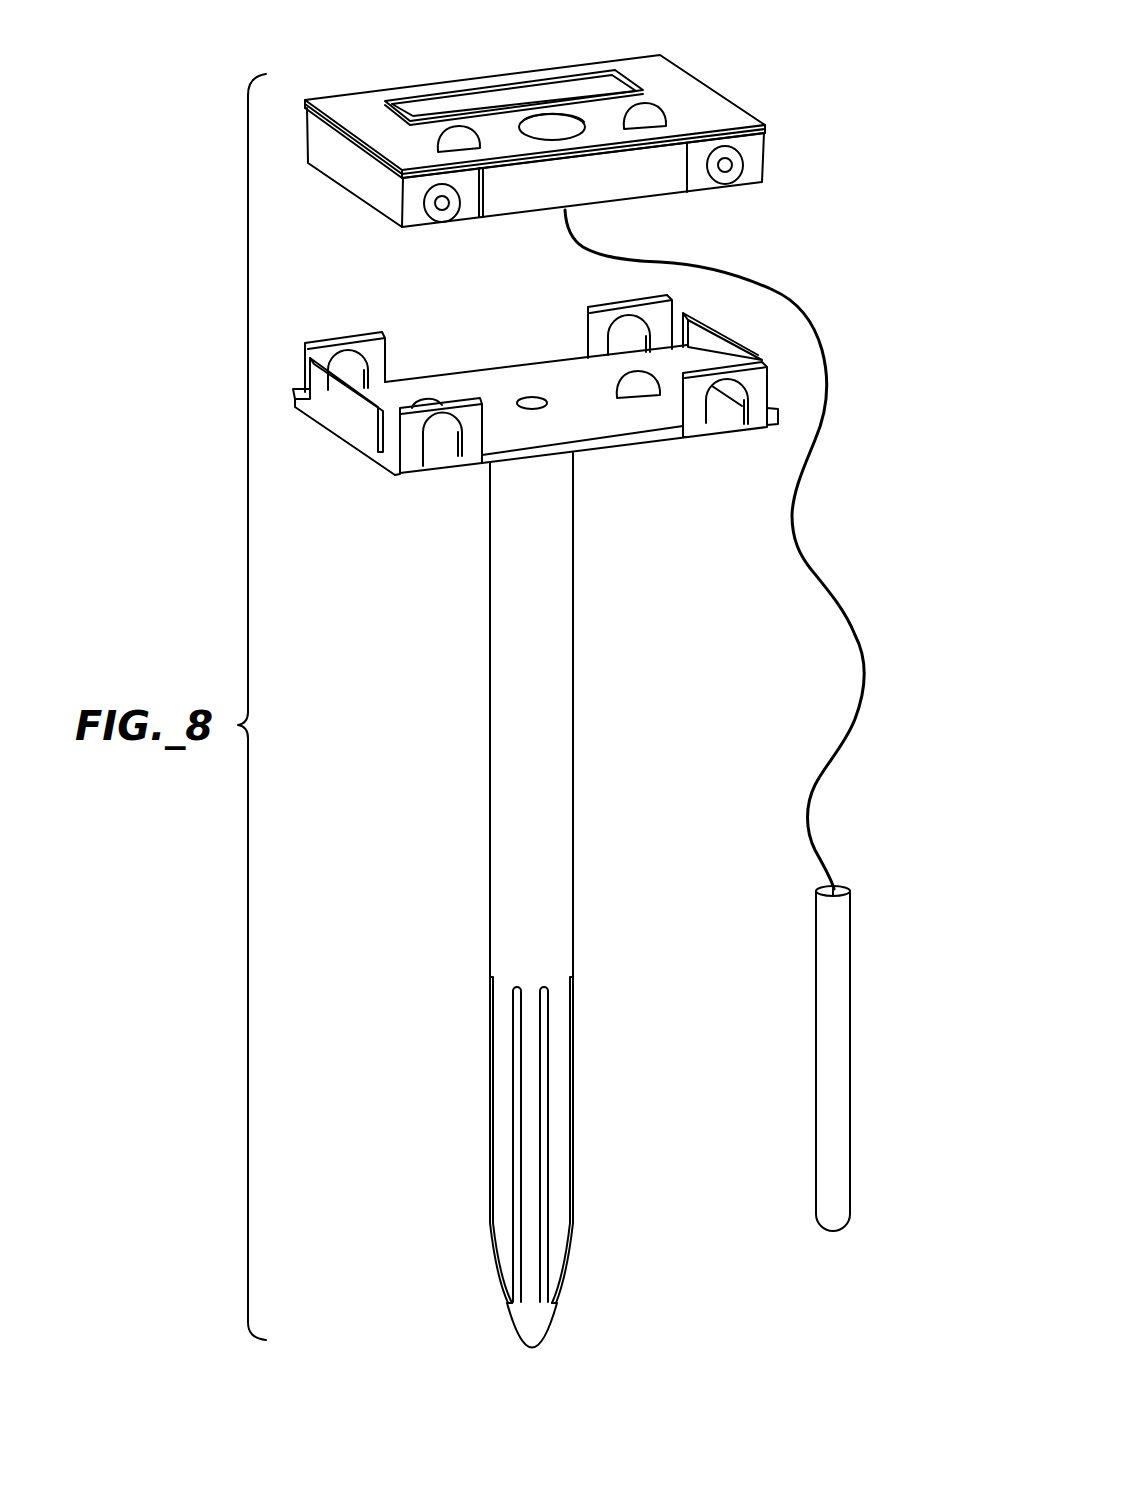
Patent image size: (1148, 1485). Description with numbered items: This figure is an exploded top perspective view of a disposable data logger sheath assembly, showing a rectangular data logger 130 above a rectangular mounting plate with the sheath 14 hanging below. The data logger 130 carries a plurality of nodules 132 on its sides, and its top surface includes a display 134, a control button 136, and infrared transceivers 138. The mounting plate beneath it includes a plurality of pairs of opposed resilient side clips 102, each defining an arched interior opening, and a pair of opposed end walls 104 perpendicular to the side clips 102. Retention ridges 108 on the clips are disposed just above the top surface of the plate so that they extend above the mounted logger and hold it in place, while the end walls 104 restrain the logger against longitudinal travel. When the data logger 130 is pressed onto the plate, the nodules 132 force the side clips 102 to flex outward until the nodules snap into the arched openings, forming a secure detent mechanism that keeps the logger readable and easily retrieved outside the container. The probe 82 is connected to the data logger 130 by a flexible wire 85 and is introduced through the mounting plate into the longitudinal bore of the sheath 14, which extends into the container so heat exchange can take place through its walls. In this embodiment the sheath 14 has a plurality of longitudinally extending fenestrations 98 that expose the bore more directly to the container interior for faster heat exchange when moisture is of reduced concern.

The sheath 14 is at (573, 692).
The probe 82 is at (851, 937).
The flexible wire 85 is at (826, 589).
The fenestrations 98 is at (517, 1048).
The side clips 102 is at (603, 330).
The end walls 104 is at (703, 350).
The retention ridges 108 is at (385, 337).
The data logger 130 is at (688, 72).
The nodules 132 is at (418, 200).
The display 134 is at (605, 90).
The control button 136 is at (547, 138).
The infrared transceivers 138 is at (670, 118).